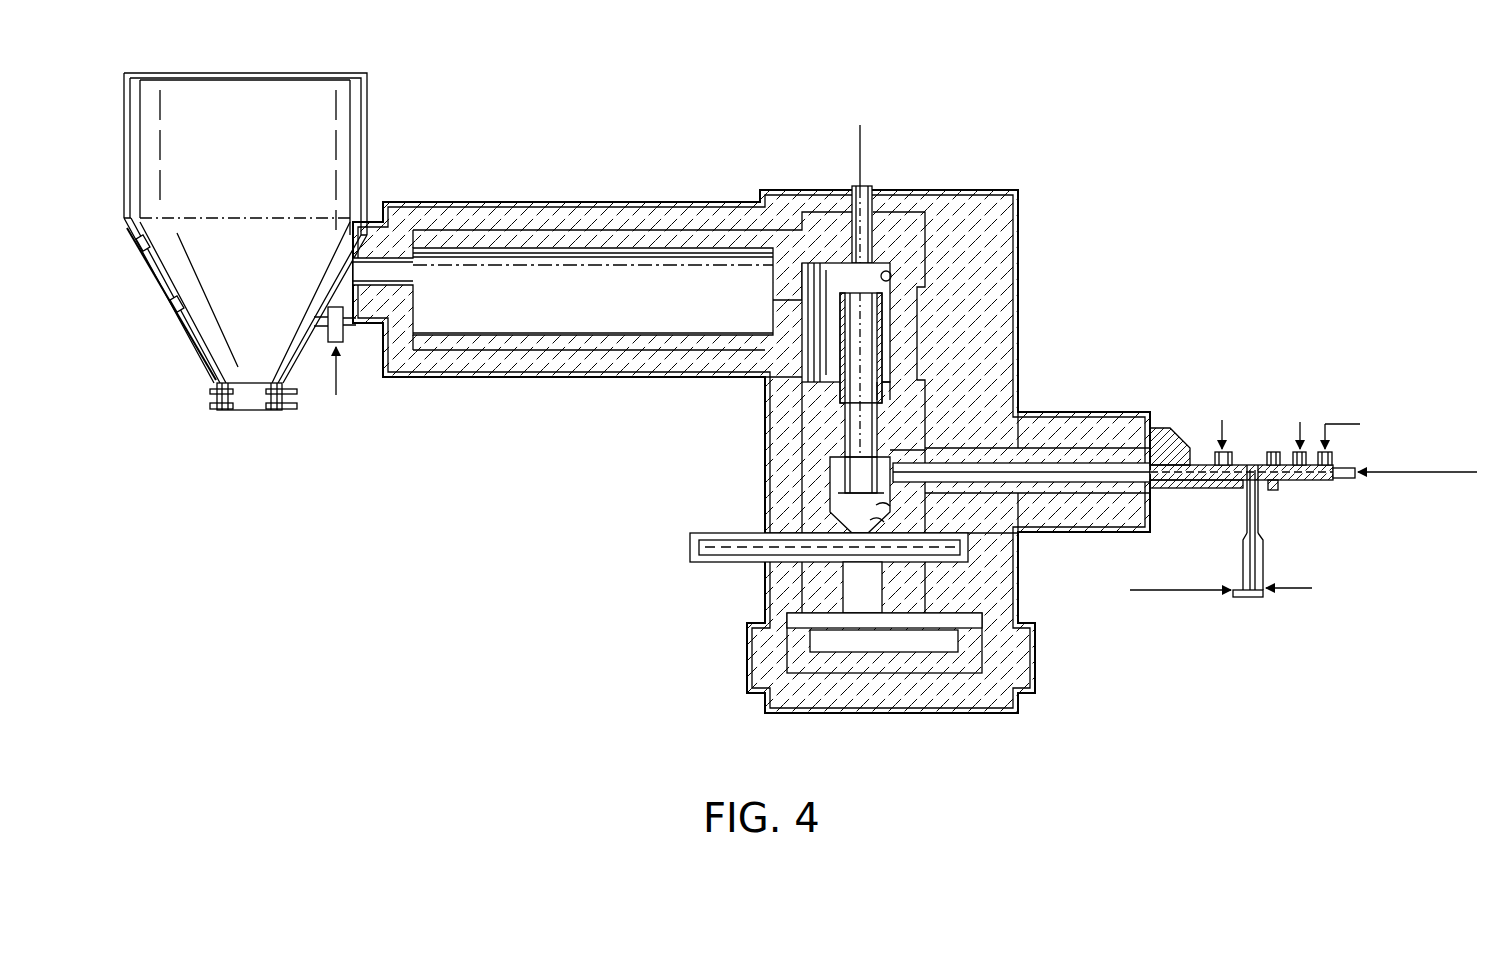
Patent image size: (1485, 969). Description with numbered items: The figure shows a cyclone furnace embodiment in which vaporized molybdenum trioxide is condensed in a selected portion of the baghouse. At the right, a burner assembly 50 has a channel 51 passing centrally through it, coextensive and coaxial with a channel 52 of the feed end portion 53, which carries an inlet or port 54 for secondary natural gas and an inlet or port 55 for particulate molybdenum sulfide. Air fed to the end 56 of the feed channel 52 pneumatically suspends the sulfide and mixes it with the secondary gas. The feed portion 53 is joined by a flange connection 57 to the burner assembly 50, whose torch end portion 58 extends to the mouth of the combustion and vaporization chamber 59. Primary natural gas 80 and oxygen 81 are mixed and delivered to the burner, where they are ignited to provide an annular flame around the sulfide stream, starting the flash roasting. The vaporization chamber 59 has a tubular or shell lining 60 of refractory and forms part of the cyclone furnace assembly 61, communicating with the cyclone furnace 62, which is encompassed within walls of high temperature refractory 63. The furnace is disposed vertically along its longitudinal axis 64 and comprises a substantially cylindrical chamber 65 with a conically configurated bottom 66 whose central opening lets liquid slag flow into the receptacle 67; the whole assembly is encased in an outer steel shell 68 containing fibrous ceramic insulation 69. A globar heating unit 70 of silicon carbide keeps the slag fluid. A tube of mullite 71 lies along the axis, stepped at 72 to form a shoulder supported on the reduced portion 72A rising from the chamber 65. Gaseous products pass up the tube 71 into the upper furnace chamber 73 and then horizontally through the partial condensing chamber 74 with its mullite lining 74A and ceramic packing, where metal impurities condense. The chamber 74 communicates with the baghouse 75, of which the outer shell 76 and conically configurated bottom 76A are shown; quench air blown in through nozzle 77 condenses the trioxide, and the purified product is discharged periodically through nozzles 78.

The burner assembly 50 is at (1250, 465).
The channel 51 is at (1253, 470).
The channel 52 is at (1276, 482).
The feed end portion 53 is at (1305, 484).
The inlet or port 54 is at (1337, 428).
The inlet or port 55 is at (1397, 427).
The end 56 is at (1412, 486).
The flange connection 57 is at (1264, 525).
The torch end portion 58 is at (1252, 476).
The combustion and vaporization chamber 59 is at (1045, 470).
The tubular or shell lining 60 is at (1105, 520).
The cyclone furnace assembly 61 is at (1022, 222).
The cyclone furnace 62 is at (838, 492).
The high temperature refractory 63 is at (908, 408).
The longitudinal axis 64 is at (863, 142).
The cylindrical chamber 65 is at (890, 506).
The conically configurated bottom 66 is at (884, 522).
The receptacle 67 is at (978, 660).
The outer steel shell 68 is at (1021, 325).
The fibrous ceramic insulation 69 is at (1000, 345).
The globar heating unit 70 is at (727, 545).
The tube of mullite 71 is at (884, 308).
The step 72 is at (848, 415).
The reduced portion 72A is at (880, 395).
The upper furnace chamber 73 is at (891, 278).
The partial condensing chamber 74 is at (545, 272).
The mullite lining 74A is at (468, 252).
The baghouse 75 is at (378, 95).
The outer shell 76 is at (372, 110).
The conically configurated bottom 76A is at (198, 343).
The nozzle 77 is at (341, 344).
The nozzles 78 is at (276, 396).
The primary natural gas 80 is at (1345, 603).
The oxygen 81 is at (1177, 595).